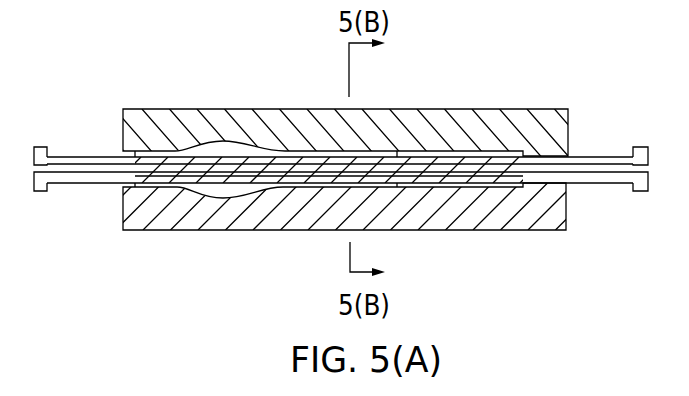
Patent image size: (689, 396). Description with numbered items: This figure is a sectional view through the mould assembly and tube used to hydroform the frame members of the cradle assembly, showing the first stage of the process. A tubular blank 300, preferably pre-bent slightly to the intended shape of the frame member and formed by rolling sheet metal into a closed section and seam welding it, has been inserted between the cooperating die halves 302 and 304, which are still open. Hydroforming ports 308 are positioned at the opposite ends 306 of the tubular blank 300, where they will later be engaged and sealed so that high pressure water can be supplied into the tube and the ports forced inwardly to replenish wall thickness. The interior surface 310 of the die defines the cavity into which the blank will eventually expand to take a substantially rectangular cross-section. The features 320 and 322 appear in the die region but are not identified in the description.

The tubular blank 300 is at (155, 163).
The die half 302 is at (467, 117).
The die half 304 is at (488, 222).
The opposite ends of the tubular blank 306 is at (550, 162).
The hydroforming ports 308 is at (80, 184).
The interior surface of the die 310 is at (397, 152).
The upper cavity recess 320 is at (172, 117).
The lower cavity recess 322 is at (176, 190).